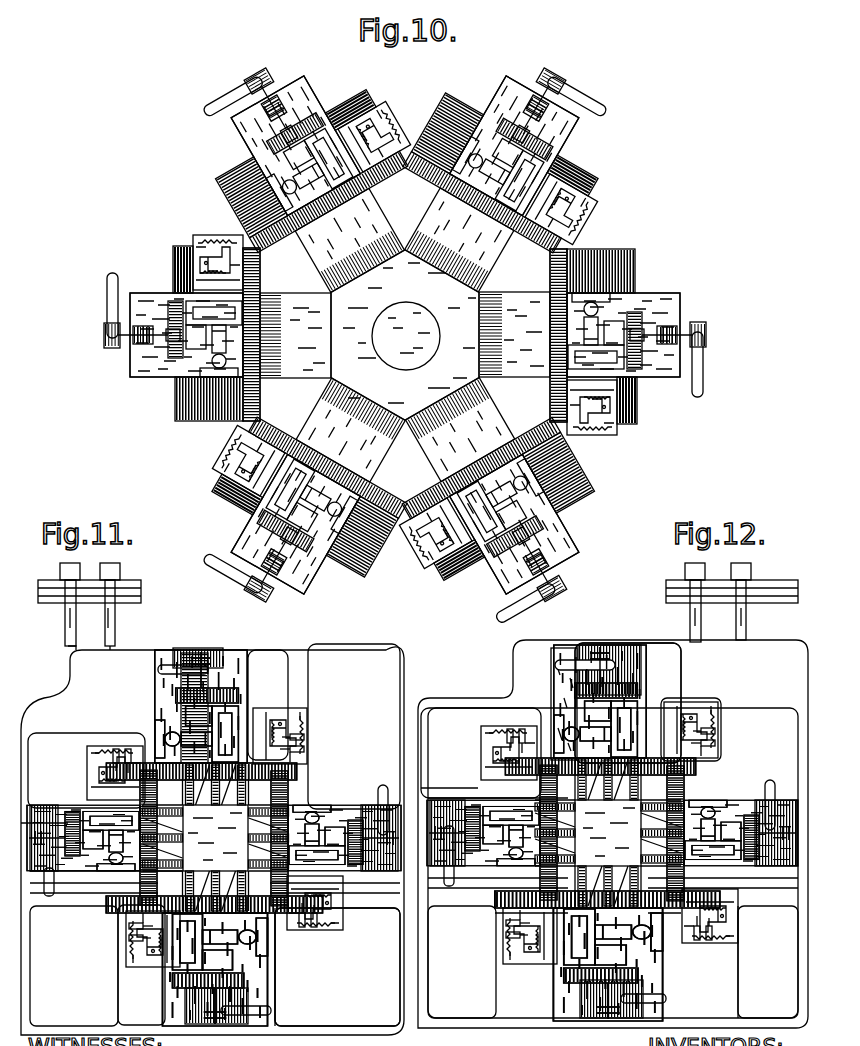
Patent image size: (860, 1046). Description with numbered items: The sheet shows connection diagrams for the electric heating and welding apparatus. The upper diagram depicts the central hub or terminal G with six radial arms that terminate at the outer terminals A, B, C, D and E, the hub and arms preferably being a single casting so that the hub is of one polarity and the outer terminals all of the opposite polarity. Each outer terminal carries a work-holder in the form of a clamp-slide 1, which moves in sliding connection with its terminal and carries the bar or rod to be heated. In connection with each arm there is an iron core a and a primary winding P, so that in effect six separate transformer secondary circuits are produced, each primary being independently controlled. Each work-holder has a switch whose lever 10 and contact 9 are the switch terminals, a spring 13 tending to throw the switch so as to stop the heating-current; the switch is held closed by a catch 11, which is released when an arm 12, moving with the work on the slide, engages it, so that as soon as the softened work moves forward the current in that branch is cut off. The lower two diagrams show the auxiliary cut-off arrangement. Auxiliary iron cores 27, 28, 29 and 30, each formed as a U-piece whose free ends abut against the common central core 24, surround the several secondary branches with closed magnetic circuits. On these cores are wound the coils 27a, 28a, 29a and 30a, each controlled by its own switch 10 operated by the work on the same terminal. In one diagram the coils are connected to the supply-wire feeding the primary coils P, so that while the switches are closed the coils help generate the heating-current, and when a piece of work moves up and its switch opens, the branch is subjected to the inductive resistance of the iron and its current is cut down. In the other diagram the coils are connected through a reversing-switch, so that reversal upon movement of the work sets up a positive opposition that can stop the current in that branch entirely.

In FIG. 10, the clamp-slide 1 is at (562, 510).
In FIG. 11, the clamp-slide 1 is at (242, 950).
In FIG. 12, the clamp-slide 1 is at (622, 940).
In FIG. 10, the contact 9 is at (422, 520).
In FIG. 11, the contact 9 is at (262, 760).
In FIG. 12, the contact 9 is at (609, 833).
In FIG. 10, the switch lever 10 is at (432, 556).
In FIG. 11, the switch lever 10 is at (272, 712).
In FIG. 12, the switch lever 10 is at (609, 833).
In FIG. 10, the catch 11 is at (452, 570).
In FIG. 11, the catch 11 is at (256, 716).
In FIG. 12, the catch 11 is at (700, 878).
In FIG. 10, the arm 12 is at (472, 566).
In FIG. 11, the arm 12 is at (246, 702).
In FIG. 12, the arm 12 is at (706, 872).
In FIG. 10, the spring 13 is at (420, 540).
In FIG. 11, the spring 13 is at (276, 736).
In FIG. 12, the spring 13 is at (609, 833).
In FIG. 11, the common central core 24 is at (240, 780).
In FIG. 11, the auxiliary iron core 27 is at (366, 798).
In FIG. 12, the auxiliary iron core 27 is at (772, 792).
In FIG. 11, the coil 27a is at (377, 778).
In FIG. 12, the coil 27a is at (762, 880).
In FIG. 11, the auxiliary iron core 28 is at (266, 950).
In FIG. 12, the auxiliary iron core 28 is at (652, 980).
In FIG. 11, the coil 28a is at (236, 1016).
In FIG. 12, the coil 28a is at (586, 1012).
In FIG. 11, the auxiliary iron core 29 is at (82, 866).
In FIG. 12, the auxiliary iron core 29 is at (458, 790).
In FIG. 11, the coil 29a is at (26, 815).
In FIG. 12, the coil 29a is at (424, 780).
In FIG. 11, the auxiliary iron core 30 is at (160, 700).
In FIG. 12, the auxiliary iron core 30 is at (560, 650).
In FIG. 11, the coil 30a is at (188, 644).
In FIG. 12, the coil 30a is at (600, 640).
In FIG. 10, the terminal A is at (572, 116).
In FIG. 11, the terminal A is at (72, 855).
In FIG. 12, the terminal A is at (470, 852).
In FIG. 10, the terminal B is at (622, 300).
In FIG. 11, the terminal B is at (332, 800).
In FIG. 12, the terminal B is at (722, 800).
In FIG. 10, the terminal C is at (542, 526).
In FIG. 11, the terminal C is at (178, 664).
In FIG. 12, the terminal C is at (572, 672).
In FIG. 10, the terminal D is at (300, 574).
In FIG. 11, the terminal D is at (252, 990).
In FIG. 12, the terminal D is at (642, 960).
In FIG. 10, the terminal E is at (160, 374).
In FIG. 10, the central hub or terminal G is at (415, 345).
In FIG. 11, the central hub or terminal G is at (225, 810).
In FIG. 12, the central hub or terminal G is at (625, 805).
In FIG. 11, the primary winding P is at (240, 870).
In FIG. 12, the primary winding P is at (572, 702).
In FIG. 10, the iron core a is at (620, 262).